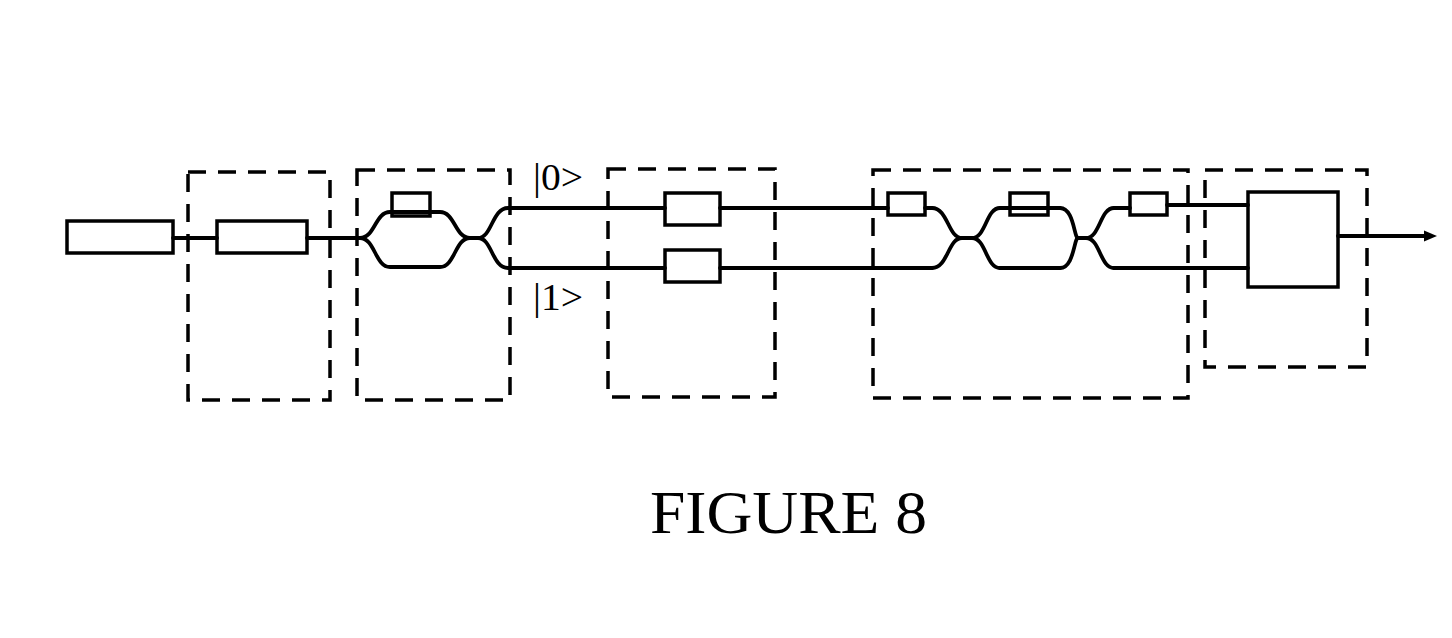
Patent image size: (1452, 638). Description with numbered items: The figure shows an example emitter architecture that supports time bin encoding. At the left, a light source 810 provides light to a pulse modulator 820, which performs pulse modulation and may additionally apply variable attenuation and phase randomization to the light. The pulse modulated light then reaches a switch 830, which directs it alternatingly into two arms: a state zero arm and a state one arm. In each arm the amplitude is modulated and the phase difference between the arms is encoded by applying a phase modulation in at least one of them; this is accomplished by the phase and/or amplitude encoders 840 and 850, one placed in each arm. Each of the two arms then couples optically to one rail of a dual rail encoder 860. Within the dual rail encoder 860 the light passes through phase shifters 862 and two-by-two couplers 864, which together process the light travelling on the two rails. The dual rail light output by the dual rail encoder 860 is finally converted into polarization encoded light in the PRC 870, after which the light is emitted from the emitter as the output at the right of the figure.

The light source 810 is at (122, 240).
The pulse modulator 820 is at (262, 243).
The switch 830 is at (412, 196).
The phase and/or amplitude encoder 840 is at (696, 202).
The phase and/or amplitude encoder 850 is at (690, 265).
The dual rail encoder 860 is at (1030, 284).
The phase shifters 862 is at (1143, 197).
The 2×2 couplers 864 is at (1078, 243).
The polarization rail converter (PRC) 870 is at (1295, 270).